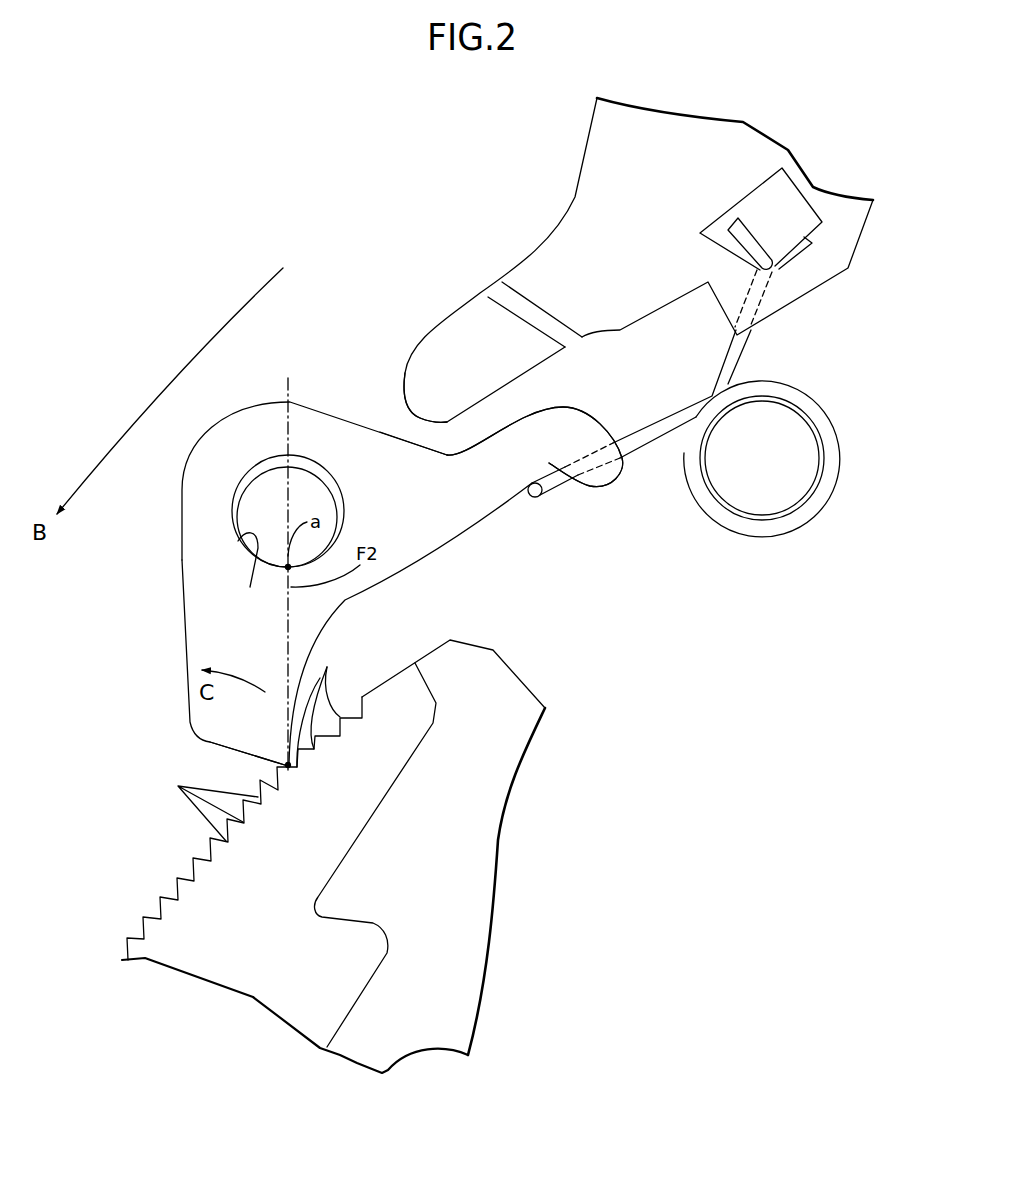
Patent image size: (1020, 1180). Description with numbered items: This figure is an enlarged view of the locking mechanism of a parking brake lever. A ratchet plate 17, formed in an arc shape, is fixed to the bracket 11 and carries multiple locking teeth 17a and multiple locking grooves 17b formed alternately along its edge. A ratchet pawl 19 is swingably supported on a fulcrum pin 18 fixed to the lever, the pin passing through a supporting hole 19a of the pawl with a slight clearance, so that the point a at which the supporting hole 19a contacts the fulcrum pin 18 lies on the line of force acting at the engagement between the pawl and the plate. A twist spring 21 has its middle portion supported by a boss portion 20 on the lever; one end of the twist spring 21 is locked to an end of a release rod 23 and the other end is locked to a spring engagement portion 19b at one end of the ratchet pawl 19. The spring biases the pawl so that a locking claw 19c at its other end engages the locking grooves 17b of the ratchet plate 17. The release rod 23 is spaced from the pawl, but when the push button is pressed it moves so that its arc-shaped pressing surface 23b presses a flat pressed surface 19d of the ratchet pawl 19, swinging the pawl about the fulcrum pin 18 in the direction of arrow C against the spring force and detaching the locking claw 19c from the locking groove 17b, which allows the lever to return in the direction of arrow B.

The bracket 11 is at (528, 679).
The ratchet plate 17 is at (178, 865).
The locking teeth 17a is at (325, 704).
The locking grooves 17b is at (200, 803).
The fulcrum pin 18 is at (260, 505).
The ratchet pawl 19 is at (180, 604).
The supporting hole 19a is at (245, 575).
The spring engagement portion 19b is at (590, 488).
The locking claw 19c is at (287, 763).
The pressed surface 19d is at (397, 430).
The boss portion 20 is at (778, 425).
The twist spring 21 is at (662, 425).
The release rod 23 is at (482, 293).
The pressing surface 23b is at (422, 414).